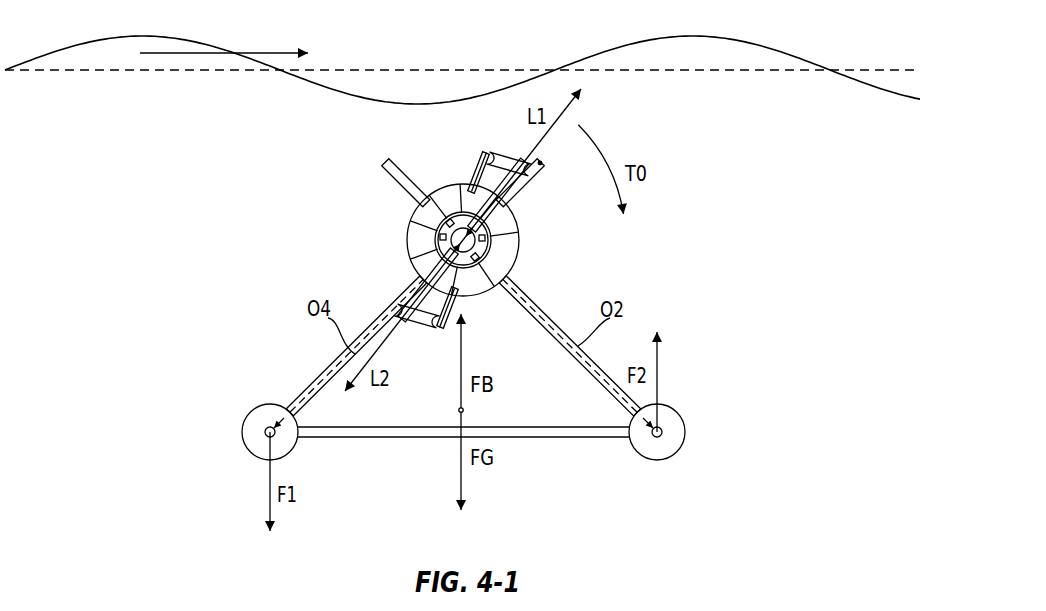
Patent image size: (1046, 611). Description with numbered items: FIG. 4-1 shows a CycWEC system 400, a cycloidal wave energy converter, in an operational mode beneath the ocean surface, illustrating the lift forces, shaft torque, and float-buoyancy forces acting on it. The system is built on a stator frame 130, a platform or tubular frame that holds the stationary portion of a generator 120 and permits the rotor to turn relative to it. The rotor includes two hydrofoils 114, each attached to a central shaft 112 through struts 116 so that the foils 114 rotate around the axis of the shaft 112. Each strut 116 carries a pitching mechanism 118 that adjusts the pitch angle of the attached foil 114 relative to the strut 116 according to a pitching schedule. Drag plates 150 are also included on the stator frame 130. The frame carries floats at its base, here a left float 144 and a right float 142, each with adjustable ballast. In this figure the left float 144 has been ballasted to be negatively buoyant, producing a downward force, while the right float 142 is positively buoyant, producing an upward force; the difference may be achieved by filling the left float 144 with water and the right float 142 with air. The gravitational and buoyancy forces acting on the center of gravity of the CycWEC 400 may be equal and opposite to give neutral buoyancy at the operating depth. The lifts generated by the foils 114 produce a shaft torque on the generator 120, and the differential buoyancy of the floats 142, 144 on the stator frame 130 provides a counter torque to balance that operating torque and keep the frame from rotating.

The CycWEC system 400 is at (360, 132).
The central shaft 112 is at (490, 249).
The hydrofoil 114 is at (505, 154).
The strut 116 is at (405, 290).
The pitching mechanism 118 is at (475, 170).
The generator 120 is at (408, 245).
The stator frame 130 is at (325, 384).
The right float 142 is at (683, 426).
The left float 144 is at (243, 428).
The drag plate 150 is at (403, 188).